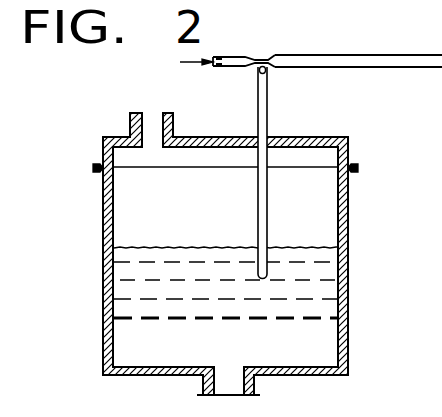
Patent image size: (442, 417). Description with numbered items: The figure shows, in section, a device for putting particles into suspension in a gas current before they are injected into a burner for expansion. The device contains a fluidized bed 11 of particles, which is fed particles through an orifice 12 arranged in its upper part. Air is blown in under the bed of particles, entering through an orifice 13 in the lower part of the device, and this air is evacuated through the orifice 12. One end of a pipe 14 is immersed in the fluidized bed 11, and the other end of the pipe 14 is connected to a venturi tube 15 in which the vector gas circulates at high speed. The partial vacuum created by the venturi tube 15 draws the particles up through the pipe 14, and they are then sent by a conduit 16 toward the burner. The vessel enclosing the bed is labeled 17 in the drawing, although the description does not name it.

The fluidized bed 11 is at (226, 282).
The orifice 12 is at (152, 150).
The orifice 13 is at (227, 343).
The pipe 14 is at (267, 215).
The venturi tube 15 is at (263, 57).
The conduit 16 is at (419, 48).
The vessel 17 is at (185, 265).